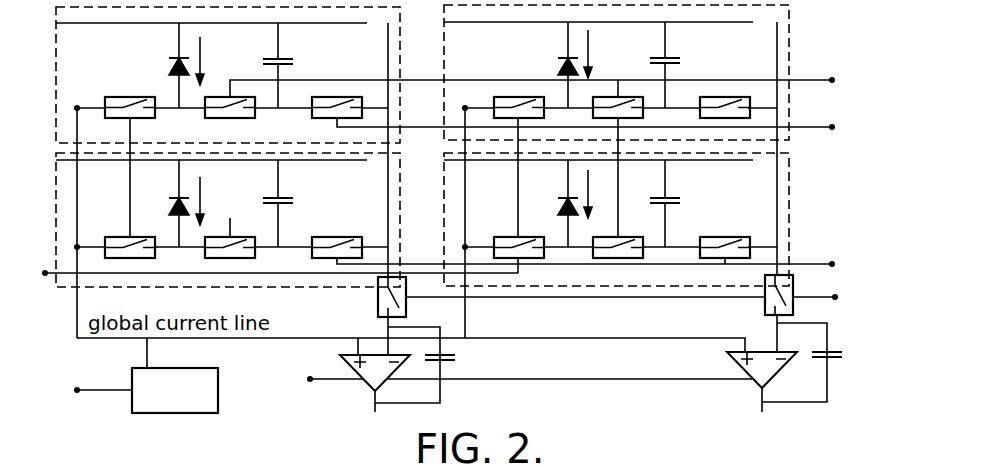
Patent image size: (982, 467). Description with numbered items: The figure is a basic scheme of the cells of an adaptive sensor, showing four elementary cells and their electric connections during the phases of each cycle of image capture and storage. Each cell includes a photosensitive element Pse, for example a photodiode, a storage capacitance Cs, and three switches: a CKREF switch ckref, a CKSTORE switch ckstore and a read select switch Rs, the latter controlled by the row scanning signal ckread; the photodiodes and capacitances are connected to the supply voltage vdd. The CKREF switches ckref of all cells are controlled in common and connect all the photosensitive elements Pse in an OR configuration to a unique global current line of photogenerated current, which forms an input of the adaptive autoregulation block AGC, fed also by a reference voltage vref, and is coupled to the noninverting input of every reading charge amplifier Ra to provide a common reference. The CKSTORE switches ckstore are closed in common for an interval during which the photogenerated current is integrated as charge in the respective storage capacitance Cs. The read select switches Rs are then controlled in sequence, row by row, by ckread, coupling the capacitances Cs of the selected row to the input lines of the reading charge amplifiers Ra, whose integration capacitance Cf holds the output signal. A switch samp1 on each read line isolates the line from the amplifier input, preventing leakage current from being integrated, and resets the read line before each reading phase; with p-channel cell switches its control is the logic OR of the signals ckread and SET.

The photosensitive element Pse is at (357, 134).
The storage capacitance Cs is at (489, 134).
The read select switch Rs is at (542, 170).
The supply voltage vdd is at (405, 104).
The CKSTORE switch ckstore is at (549, 75).
The CKREAD control signal ckread is at (600, 183).
The CKREF switch ckref is at (280, 291).
The SAMP1 switch samp1 is at (633, 293).
The reading charge amplifier Ra is at (552, 367).
The integration capacitance Cf is at (646, 357).
The SET logic signal SET is at (510, 396).
The adaptive autoregulation block AGC is at (175, 375).
The reference voltage vref is at (102, 378).